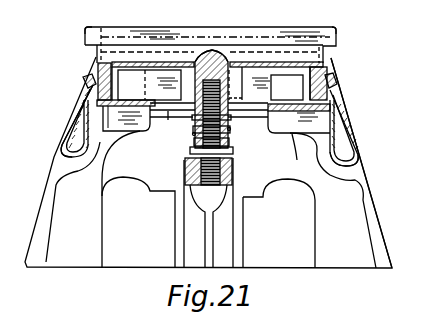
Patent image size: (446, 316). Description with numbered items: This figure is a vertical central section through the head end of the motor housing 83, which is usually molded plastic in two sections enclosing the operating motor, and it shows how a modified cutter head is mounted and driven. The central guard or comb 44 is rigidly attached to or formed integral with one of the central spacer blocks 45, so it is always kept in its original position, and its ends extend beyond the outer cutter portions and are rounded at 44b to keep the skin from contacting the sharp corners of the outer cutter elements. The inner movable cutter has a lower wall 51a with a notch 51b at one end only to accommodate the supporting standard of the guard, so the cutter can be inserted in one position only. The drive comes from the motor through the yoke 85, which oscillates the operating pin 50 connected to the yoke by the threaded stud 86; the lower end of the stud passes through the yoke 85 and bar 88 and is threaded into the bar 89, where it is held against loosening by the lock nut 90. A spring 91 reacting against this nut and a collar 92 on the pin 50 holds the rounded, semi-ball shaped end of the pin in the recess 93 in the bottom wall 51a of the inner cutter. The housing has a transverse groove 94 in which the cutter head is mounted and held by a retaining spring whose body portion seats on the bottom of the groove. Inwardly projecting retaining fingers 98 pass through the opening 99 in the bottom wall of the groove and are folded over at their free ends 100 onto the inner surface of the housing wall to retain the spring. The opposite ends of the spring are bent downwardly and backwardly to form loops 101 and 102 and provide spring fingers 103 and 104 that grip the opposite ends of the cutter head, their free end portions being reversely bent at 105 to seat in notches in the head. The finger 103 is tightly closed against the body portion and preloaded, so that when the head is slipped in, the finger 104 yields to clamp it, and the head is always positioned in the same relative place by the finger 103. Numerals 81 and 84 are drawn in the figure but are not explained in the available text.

The central guard or comb 44 is at (298, 43).
The rounded ends of the guard 44b is at (88, 28).
The central spacer blocks 45 is at (160, 72).
The lower wall of the inner cutter 51a is at (300, 65).
The notch 51b is at (122, 62).
The operating pin 50 is at (230, 80).
The recess 93 is at (214, 53).
The collar 92 is at (232, 117).
The spring 91 is at (233, 131).
The lock nut 90 is at (230, 151).
The threaded stud 86 is at (190, 147).
The yoke 85 is at (232, 164).
The bar 88 is at (229, 179).
The bar 89 is at (190, 184).
The opening 84 is at (296, 257).
The motor housing 83 is at (385, 222).
The shell wall 81 is at (93, 160).
The retaining fingers 98 is at (150, 128).
The opening 99 is at (170, 113).
The free ends of the retaining fingers 100 is at (235, 199).
The loop 101 is at (62, 143).
The loop 102 is at (364, 155).
The spring finger 103 is at (76, 116).
The spring finger 104 is at (353, 124).
The reversely bent free end portions 105 is at (100, 73).
The transverse groove 94 is at (334, 79).